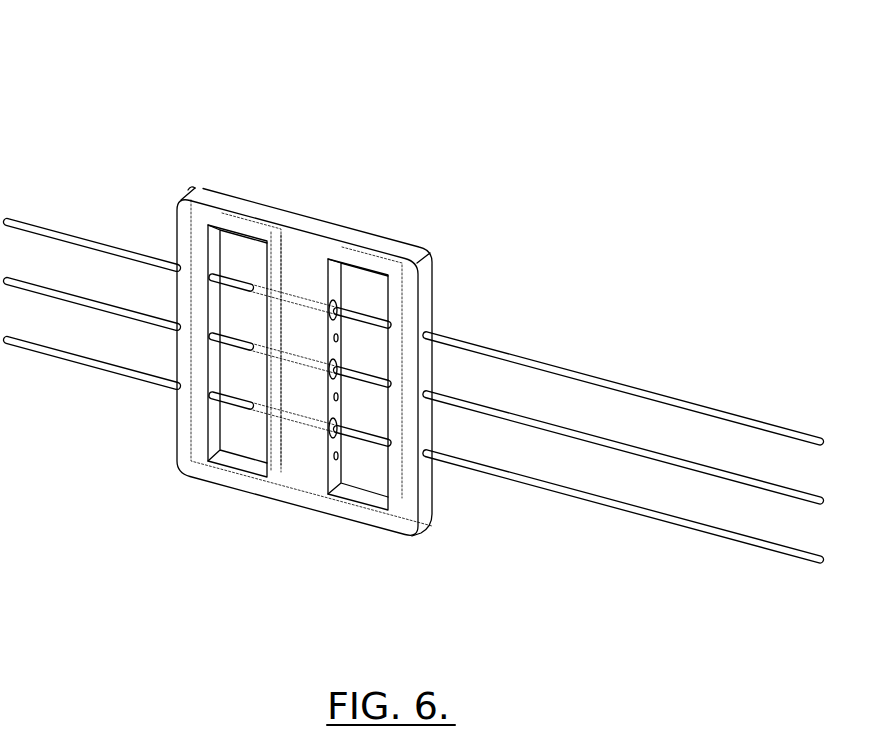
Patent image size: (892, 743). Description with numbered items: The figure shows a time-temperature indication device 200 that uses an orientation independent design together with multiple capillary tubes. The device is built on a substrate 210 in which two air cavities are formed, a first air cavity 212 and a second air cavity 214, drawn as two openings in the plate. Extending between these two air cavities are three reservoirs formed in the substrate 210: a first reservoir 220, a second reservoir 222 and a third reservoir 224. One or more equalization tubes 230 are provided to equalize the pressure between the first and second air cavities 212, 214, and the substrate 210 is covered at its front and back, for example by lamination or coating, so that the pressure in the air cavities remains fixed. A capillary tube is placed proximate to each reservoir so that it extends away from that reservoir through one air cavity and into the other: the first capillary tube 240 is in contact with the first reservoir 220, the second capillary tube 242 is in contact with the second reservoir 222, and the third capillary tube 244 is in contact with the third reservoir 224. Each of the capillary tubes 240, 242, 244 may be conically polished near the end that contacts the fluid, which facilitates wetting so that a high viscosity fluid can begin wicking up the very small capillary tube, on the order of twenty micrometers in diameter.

The time-temperature indication device 200 is at (140, 68).
The substrate 210 is at (410, 513).
The first air cavity 212 is at (250, 262).
The second air cavity 214 is at (345, 303).
The first reservoir 220 is at (312, 310).
The second reservoir 222 is at (305, 363).
The third reservoir 224 is at (305, 420).
The equalization tubes 230 is at (345, 392).
The first capillary tube 240 is at (585, 378).
The second capillary tube 242 is at (597, 440).
The third capillary tube 244 is at (597, 497).